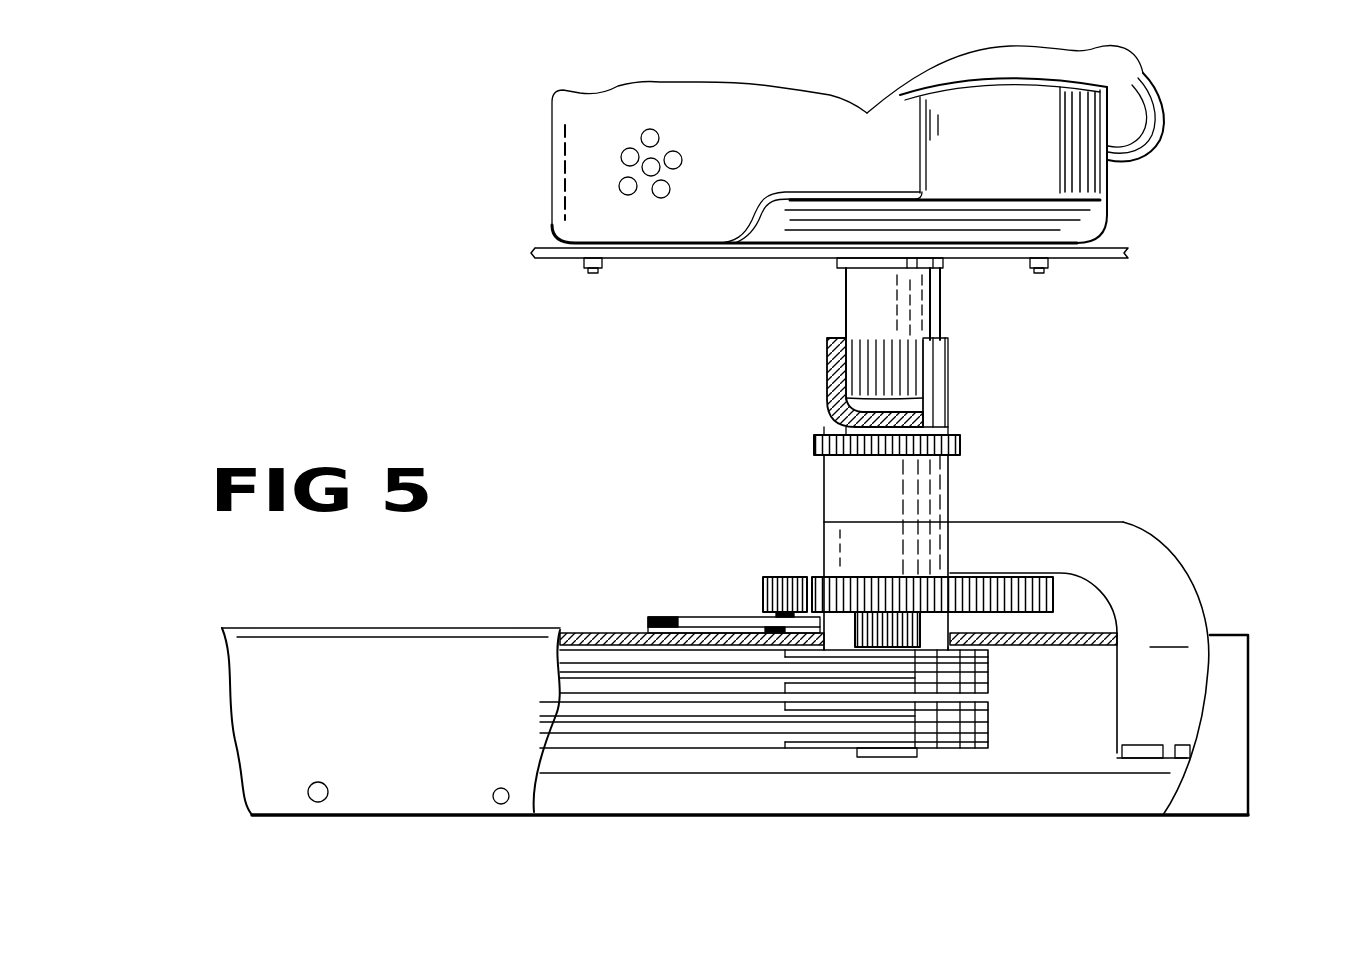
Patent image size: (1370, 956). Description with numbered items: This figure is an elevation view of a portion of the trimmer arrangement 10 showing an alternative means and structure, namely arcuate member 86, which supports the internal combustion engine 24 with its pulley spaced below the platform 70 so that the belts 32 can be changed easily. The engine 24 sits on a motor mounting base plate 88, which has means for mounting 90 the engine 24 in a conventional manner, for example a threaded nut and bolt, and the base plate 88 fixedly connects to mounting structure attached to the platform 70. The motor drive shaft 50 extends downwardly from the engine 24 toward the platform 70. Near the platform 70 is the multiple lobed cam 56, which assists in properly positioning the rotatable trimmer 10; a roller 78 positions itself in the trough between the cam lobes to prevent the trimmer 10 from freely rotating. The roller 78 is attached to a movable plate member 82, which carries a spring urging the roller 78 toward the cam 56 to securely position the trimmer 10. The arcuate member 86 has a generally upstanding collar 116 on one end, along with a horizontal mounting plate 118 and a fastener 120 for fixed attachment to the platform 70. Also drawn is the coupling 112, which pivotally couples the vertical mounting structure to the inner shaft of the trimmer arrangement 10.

The trimmer arrangement 10 is at (1213, 447).
The internal combustion engine 24 is at (705, 118).
The belts 32 is at (578, 725).
The motor drive shaft 50 is at (860, 303).
The multiple lobed cam 56 is at (1008, 587).
The platform 70 is at (627, 632).
The roller 78 is at (773, 575).
The movable plate member 82 is at (698, 617).
The arcuate member 86 is at (1147, 558).
The motor mounting base plate 88 is at (1124, 250).
The means for mounting 90 is at (1040, 277).
The coupling 112 is at (978, 690).
The upstanding collar 116 is at (852, 530).
The horizontal mounting plate 118 is at (1113, 768).
The fastener 120 is at (1138, 743).